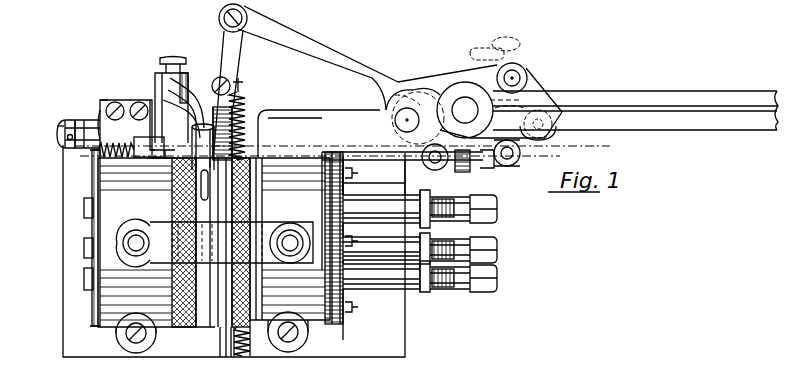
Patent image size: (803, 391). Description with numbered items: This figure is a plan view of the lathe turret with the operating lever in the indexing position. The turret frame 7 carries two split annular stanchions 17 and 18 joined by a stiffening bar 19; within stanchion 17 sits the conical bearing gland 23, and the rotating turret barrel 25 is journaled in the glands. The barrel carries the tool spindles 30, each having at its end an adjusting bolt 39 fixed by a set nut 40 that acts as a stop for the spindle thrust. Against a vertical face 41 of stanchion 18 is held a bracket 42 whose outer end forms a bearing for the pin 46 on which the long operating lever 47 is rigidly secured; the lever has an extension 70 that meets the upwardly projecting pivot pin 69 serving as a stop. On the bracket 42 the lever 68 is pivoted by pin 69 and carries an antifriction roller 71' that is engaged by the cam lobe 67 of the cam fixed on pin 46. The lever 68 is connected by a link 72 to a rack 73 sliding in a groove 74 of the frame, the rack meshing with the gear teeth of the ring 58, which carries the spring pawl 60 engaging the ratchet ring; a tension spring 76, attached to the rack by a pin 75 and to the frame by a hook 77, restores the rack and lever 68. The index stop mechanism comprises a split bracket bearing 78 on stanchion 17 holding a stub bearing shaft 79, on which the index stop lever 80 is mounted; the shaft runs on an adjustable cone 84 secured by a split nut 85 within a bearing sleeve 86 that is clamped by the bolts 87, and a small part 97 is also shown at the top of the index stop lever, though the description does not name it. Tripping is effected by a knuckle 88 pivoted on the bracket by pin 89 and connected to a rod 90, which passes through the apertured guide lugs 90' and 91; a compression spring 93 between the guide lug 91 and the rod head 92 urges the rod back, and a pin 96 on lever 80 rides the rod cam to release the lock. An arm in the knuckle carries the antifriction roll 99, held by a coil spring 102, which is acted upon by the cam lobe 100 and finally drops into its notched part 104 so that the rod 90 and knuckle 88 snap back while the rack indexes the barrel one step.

The turret frame 7 is at (234, 251).
The annular stanchion 17 is at (214, 255).
The annular stanchion 18 is at (302, 252).
The stiffening bar 19 is at (252, 250).
The bearing gland 23 is at (92, 183).
The turret barrel 25 is at (92, 190).
The spindle 30 is at (84, 208).
The adjusting bolt 39 is at (448, 246).
The set nut 40 is at (426, 192).
The vertical face 41 is at (270, 150).
The bracket 42 is at (370, 190).
The pin 46 is at (465, 110).
The lever 47 is at (629, 96).
The ring 58 is at (202, 242).
The spring pawl 60 is at (224, 240).
The cam lobe 67 is at (462, 172).
The lever 68 is at (318, 58).
The pivot pin 69 is at (396, 124).
The extension 70 is at (430, 90).
The roller 71' is at (435, 167).
The link 72 is at (236, 56).
The rack 73 is at (205, 125).
The groove 74 is at (224, 358).
The pin 75 is at (243, 82).
The tension spring 76 is at (245, 97).
The hook 77 is at (242, 357).
The split bracket bearing 78 is at (108, 100).
The stub bearing shaft 79 is at (58, 143).
The index stop lever 80 is at (160, 73).
The adjustable cone 84 is at (74, 120).
The split nut 85 is at (58, 122).
The bearing sleeve 86 is at (82, 120).
The bolt 87 is at (118, 101).
The knuckle 88 is at (535, 86).
The pivot pin 89 is at (518, 68).
The rod 90 is at (374, 177).
The apertured guide lug 90' is at (494, 173).
The apertured guide lug 91 is at (138, 140).
The head 92 is at (98, 152).
The compression spring 93 is at (100, 125).
The pin 96 is at (166, 104).
The thumb screw 97 is at (173, 57).
The antifriction roll 99 is at (500, 160).
The cam lobe 100 is at (497, 65).
The coil spring 102 is at (552, 136).
The notched part 104 is at (487, 53).